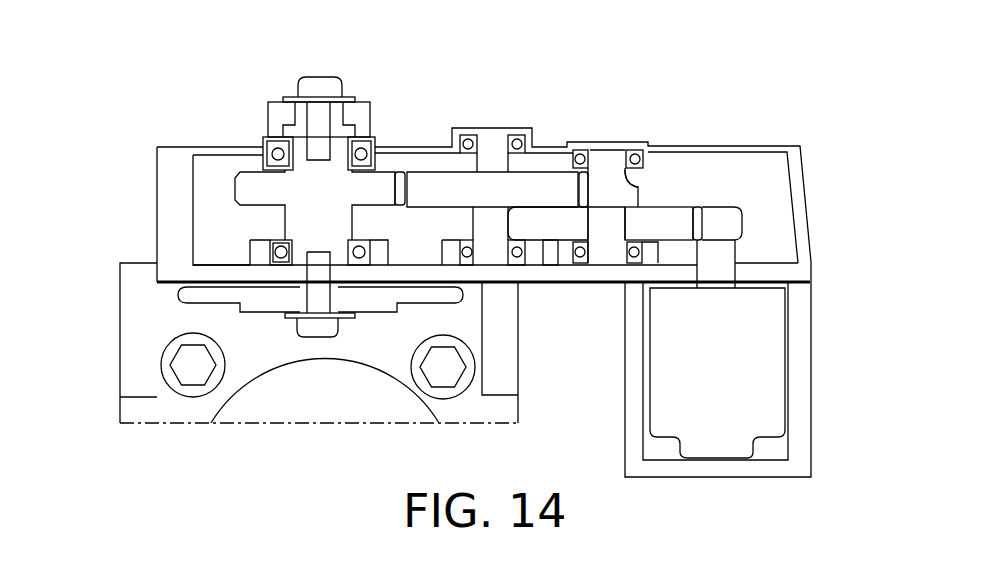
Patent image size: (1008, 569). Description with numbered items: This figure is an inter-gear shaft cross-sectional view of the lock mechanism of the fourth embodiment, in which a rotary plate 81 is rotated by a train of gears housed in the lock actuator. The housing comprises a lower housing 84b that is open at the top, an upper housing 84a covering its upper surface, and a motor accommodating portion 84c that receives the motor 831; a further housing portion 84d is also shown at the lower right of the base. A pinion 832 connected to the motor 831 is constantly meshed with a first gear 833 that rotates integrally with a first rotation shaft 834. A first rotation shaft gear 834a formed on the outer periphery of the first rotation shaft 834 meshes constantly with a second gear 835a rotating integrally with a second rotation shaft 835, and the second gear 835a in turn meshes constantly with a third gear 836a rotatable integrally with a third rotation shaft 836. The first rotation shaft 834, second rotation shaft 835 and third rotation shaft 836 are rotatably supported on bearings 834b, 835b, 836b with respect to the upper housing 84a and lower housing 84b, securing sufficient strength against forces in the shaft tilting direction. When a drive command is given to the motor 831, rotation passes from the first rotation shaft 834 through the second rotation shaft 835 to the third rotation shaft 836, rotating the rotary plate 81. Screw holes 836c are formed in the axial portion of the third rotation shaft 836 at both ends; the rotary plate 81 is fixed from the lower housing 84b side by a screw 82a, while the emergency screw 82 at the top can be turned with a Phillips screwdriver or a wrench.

The rotary plate 81 is at (190, 310).
The emergency screw 82 is at (310, 76).
The screw 82a is at (327, 295).
The motor 831 is at (657, 395).
The pinion 832 is at (742, 222).
The first gear 833 is at (673, 205).
The first rotation shaft 834 is at (606, 168).
The first rotation shaft gear 834a is at (637, 183).
The bearing 834b is at (582, 270).
The second rotation shaft 835 is at (493, 156).
The second gear 835a is at (543, 170).
The bearing 835b is at (518, 270).
The third rotation shaft 836 is at (306, 186).
The third gear 836a is at (385, 162).
The bearing 836b is at (268, 230).
The screw holes 836c is at (323, 124).
The upper housing 84a is at (733, 146).
The lower housing 84b is at (156, 186).
The motor accommodating portion 84c is at (810, 377).
The housing lower portion 84d is at (523, 403).